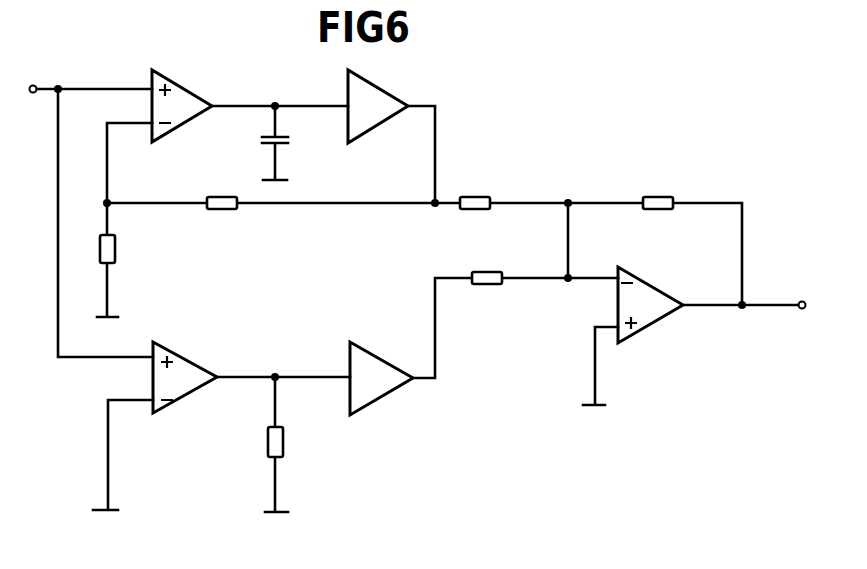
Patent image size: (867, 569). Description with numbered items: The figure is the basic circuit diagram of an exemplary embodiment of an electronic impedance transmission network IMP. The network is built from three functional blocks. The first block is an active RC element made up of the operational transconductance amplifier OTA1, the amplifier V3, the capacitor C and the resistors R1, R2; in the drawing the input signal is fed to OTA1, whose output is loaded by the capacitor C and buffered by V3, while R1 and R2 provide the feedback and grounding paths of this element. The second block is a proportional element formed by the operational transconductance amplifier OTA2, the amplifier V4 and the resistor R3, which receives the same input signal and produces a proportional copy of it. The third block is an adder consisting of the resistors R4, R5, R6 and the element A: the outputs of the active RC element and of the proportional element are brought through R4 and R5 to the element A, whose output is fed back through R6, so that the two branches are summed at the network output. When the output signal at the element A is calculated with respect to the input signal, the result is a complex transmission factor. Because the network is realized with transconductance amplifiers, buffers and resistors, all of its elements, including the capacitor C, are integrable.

The operational transconductance amplifier OTA1 is at (184, 91).
The operational transconductance amplifier OTA2 is at (185, 395).
The amplifier V3 is at (378, 100).
The amplifier V4 is at (381, 370).
The capacitor C is at (265, 143).
The resistor R1 is at (117, 260).
The resistor R2 is at (222, 223).
The resistor R3 is at (287, 444).
The resistor R4 is at (475, 185).
The resistor R5 is at (487, 260).
The resistor R6 is at (658, 185).
The adder element A is at (650, 316).
The impedance transmission network IMP is at (503, 490).